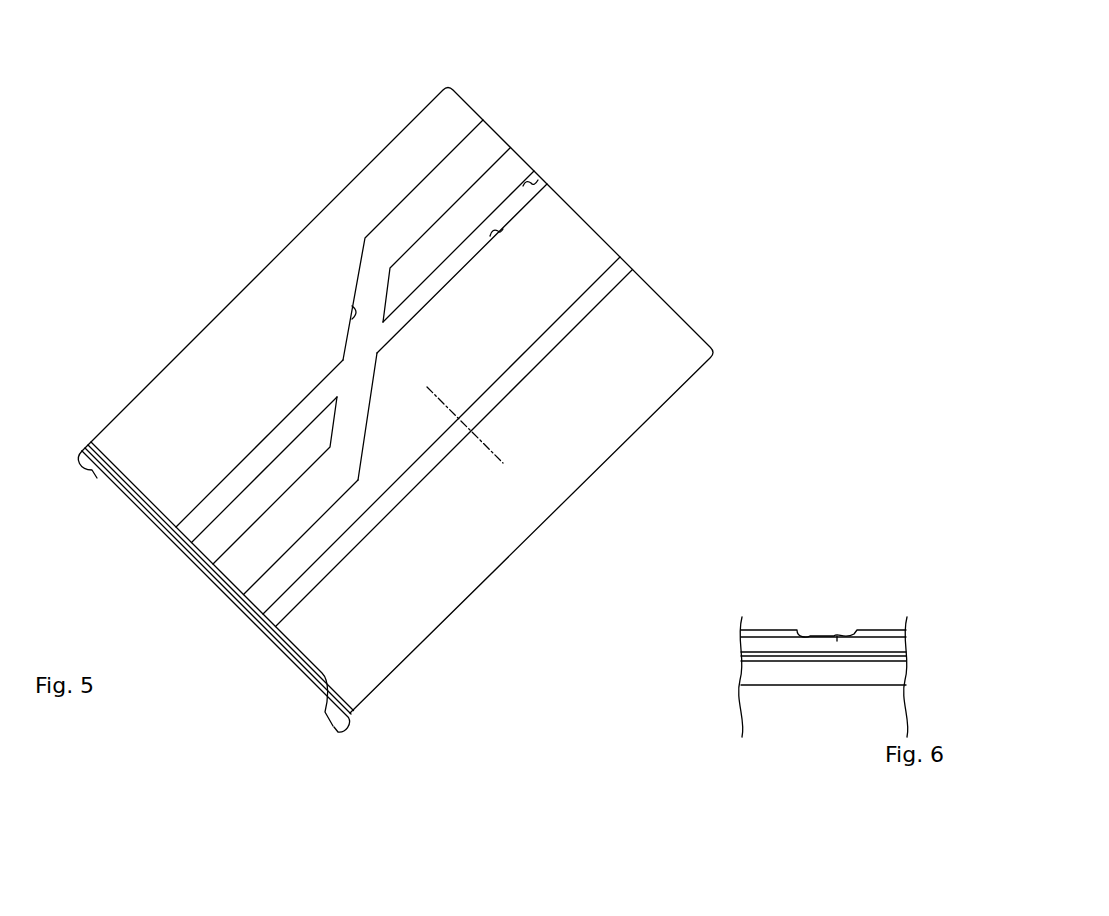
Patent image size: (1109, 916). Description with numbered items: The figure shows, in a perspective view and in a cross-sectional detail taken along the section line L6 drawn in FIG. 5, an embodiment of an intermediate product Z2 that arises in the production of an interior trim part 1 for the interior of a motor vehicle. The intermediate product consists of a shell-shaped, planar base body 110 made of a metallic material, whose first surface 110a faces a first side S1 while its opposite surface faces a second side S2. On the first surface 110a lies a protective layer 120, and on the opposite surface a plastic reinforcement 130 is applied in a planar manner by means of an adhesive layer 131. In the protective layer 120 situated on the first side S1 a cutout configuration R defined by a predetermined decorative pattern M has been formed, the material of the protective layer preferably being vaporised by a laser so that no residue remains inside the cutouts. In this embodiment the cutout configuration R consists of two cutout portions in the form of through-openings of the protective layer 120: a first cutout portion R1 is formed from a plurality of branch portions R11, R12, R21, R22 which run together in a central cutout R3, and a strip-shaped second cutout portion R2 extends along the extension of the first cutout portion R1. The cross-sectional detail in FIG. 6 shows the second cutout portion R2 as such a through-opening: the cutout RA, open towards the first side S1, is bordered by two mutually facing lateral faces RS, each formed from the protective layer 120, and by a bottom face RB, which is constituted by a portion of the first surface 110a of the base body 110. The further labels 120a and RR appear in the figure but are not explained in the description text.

In FIG. 5, the interior trim part 1 is at (476, 81).
In FIG. 5, the decorative pattern M is at (398, 151).
In FIG. 5, the intermediate product Z2 is at (133, 241).
In FIG. 6, the intermediate product Z2 is at (792, 528).
In FIG. 5, the shell-shaped base body 110 is at (107, 480).
In FIG. 6, the shell-shaped base body 110 is at (750, 645).
In FIG. 5, the first surface 110a is at (418, 215).
In FIG. 6, the first surface 110a is at (845, 632).
In FIG. 5, the protective layer 120 is at (140, 500).
In FIG. 6, the protective layer 120 is at (741, 630).
In FIG. 6, the surface of second layer 120a is at (755, 622).
In FIG. 5, the plastic reinforcement 130 is at (166, 546).
In FIG. 6, the plastic reinforcement 130 is at (763, 675).
In FIG. 6, the adhesive layer 131 is at (750, 657).
In FIG. 5, the cutout configuration R is at (318, 315).
In FIG. 5, the first cutout portion R1 is at (213, 384).
In FIG. 5, the branch portion R11 is at (218, 488).
In FIG. 5, the branch portion R12 is at (229, 580).
In FIG. 5, the second cutout portion R2 is at (395, 561).
In FIG. 6, the second cutout portion R2 is at (846, 584).
In FIG. 5, the branch portion R21 is at (375, 243).
In FIG. 5, the branch portion R22 is at (412, 303).
In FIG. 5, the central cutout R3 is at (360, 362).
In FIG. 5, the rib recess RR is at (352, 308).
In FIG. 6, the rib recess RR is at (797, 630).
In FIG. 5, the lateral faces RS is at (548, 178).
In FIG. 6, the lateral faces RS is at (806, 634).
In FIG. 6, the cutout RA is at (820, 634).
In FIG. 6, the bottom face RB is at (808, 634).
In FIG. 5, the first side S1 is at (387, 625).
In FIG. 6, the first side S1 is at (786, 566).
In FIG. 5, the second side S2 is at (300, 706).
In FIG. 6, the second side S2 is at (797, 717).
In FIG. 5, the section line L6 is at (466, 366).